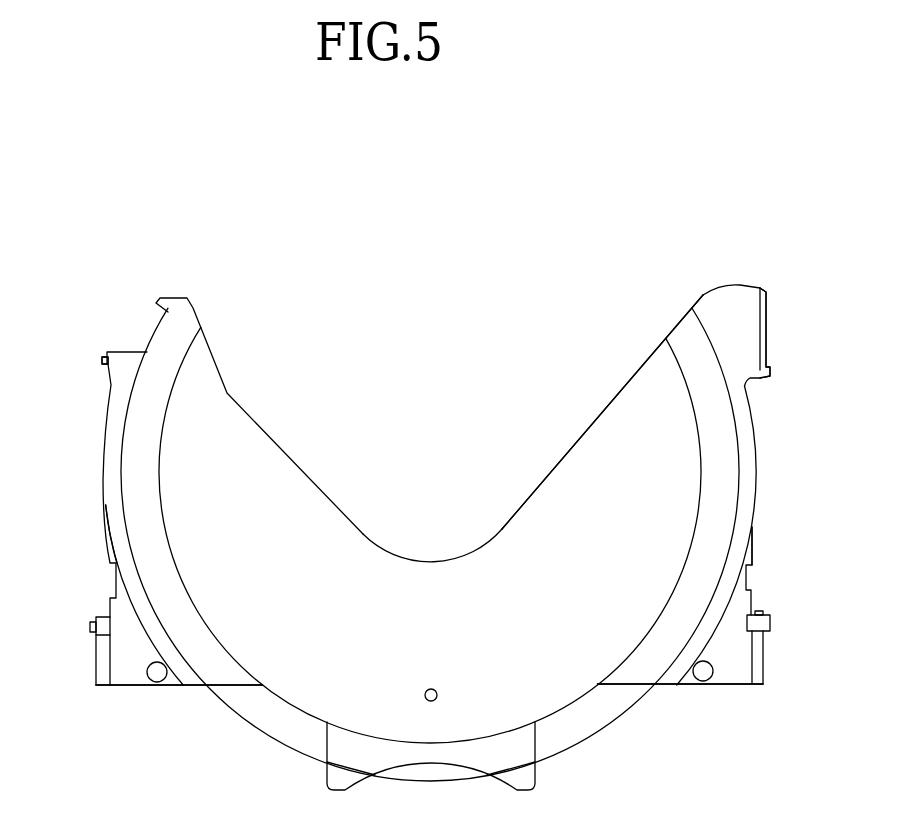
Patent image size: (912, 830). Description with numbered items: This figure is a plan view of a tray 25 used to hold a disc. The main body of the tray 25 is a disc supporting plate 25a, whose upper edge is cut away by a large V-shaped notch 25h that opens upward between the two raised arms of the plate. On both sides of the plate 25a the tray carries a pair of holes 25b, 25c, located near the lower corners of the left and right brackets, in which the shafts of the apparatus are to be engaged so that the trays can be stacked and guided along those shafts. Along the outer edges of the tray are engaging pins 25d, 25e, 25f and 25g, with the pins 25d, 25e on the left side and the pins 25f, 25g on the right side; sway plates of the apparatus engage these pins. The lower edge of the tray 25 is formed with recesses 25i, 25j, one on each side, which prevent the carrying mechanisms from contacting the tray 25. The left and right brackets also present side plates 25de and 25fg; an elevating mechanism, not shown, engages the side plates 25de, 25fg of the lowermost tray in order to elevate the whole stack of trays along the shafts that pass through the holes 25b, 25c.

The tray 25 is at (747, 458).
The disc supporting plate 25a is at (583, 475).
The hole 25b is at (157, 675).
The hole 25c is at (710, 673).
The engaging pin 25d is at (90, 628).
The side plate 25de is at (103, 557).
The engaging pin 25e is at (97, 363).
The engaging pin 25f is at (770, 623).
The side plate 25fg is at (757, 548).
The engaging pin 25g is at (770, 369).
The V-shaped notch 25h is at (445, 476).
The recess 25i is at (237, 710).
The recess 25j is at (634, 704).